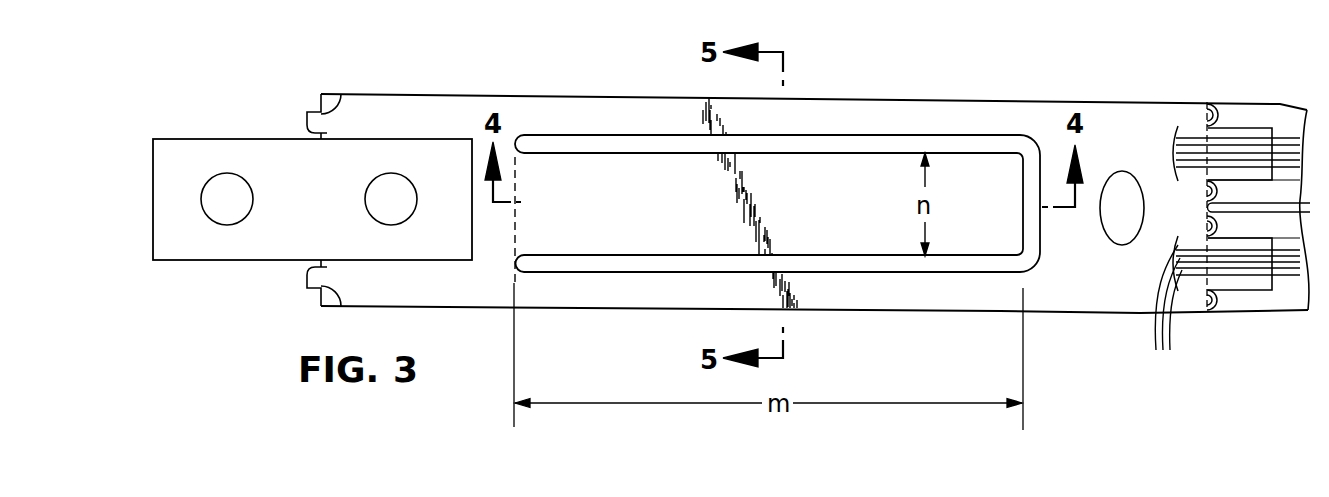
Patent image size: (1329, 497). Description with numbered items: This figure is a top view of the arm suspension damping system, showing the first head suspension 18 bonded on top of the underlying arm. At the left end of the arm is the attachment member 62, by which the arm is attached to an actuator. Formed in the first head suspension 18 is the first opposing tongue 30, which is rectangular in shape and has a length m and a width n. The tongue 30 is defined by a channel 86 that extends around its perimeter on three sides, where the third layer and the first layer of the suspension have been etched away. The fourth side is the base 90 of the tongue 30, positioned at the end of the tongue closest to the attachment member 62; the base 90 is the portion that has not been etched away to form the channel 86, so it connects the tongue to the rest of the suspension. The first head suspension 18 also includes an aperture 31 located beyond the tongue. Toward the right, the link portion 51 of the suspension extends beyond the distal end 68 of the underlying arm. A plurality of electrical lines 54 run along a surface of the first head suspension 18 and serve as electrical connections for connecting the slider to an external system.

The first head suspension 18 is at (870, 99).
The first opposing tongue 30 is at (682, 221).
The aperture 31 is at (1110, 242).
The link portion 51 is at (1240, 313).
The electrical lines 54 is at (1164, 316).
The attachment member 62 is at (328, 214).
The distal end 68 is at (1201, 100).
The channel 86 is at (555, 146).
The base 90 is at (513, 237).